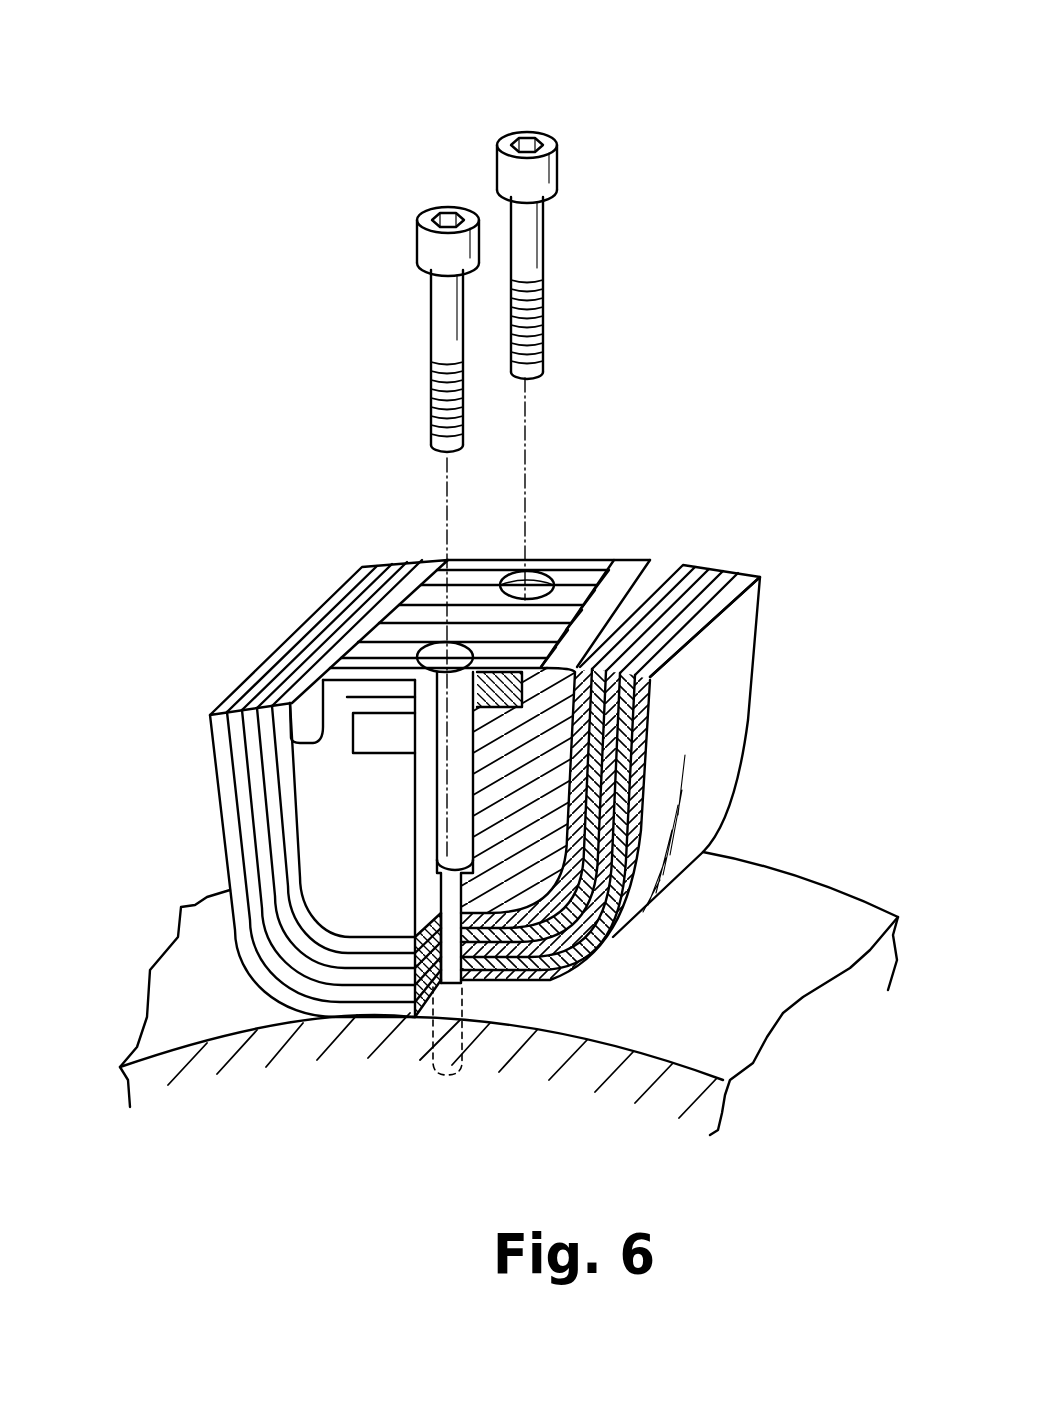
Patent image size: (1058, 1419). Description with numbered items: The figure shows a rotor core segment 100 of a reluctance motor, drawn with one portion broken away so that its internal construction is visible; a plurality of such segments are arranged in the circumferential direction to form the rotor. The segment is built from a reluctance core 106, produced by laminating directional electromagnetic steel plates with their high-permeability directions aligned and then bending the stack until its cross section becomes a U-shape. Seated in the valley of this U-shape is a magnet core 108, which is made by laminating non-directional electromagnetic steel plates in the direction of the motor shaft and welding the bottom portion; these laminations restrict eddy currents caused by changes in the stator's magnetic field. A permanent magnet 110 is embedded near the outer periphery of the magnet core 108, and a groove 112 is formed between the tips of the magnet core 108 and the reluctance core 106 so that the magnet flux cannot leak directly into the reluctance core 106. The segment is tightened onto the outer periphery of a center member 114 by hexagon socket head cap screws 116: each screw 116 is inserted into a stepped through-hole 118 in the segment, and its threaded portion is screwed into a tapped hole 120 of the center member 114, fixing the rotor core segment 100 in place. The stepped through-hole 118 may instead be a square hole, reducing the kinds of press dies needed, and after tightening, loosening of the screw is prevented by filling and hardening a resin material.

The rotor core segment 100 is at (266, 485).
The reluctance core 106 is at (715, 707).
The magnet core 108 is at (604, 561).
The permanent magnet 110 is at (374, 745).
The groove 112 is at (450, 576).
The center member 114 is at (762, 993).
The hexagon socket head cap screw 116 is at (425, 208).
The stepped through-hole 118 is at (437, 652).
The tapped hole 120 is at (433, 1053).